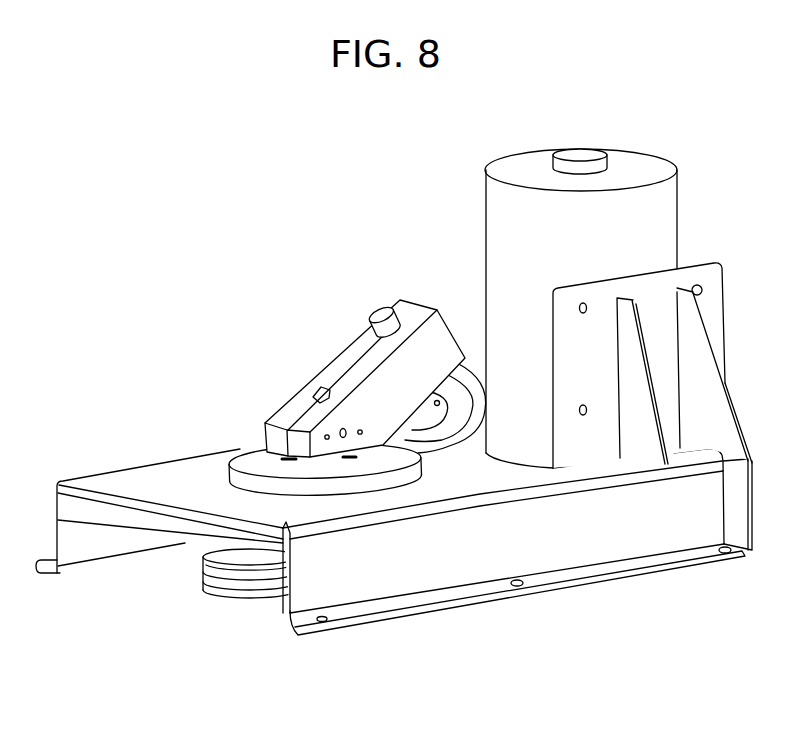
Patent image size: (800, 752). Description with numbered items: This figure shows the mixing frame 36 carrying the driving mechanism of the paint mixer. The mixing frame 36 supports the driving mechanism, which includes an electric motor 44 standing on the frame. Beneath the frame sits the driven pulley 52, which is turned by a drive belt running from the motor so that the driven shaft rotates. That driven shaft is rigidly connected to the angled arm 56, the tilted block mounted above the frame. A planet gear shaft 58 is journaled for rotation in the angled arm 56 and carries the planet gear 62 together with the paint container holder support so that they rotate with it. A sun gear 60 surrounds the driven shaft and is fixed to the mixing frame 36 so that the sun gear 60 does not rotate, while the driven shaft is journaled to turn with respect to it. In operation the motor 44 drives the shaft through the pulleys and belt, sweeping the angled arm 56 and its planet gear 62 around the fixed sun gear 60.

The mixing frame 36 is at (460, 564).
The electric motor 44 is at (629, 250).
The driven pulley 52 is at (202, 563).
The angled arm 56 is at (392, 412).
The planet gear shaft 58 is at (384, 308).
The sun gear 60 is at (232, 462).
The planet gear 62 is at (440, 455).